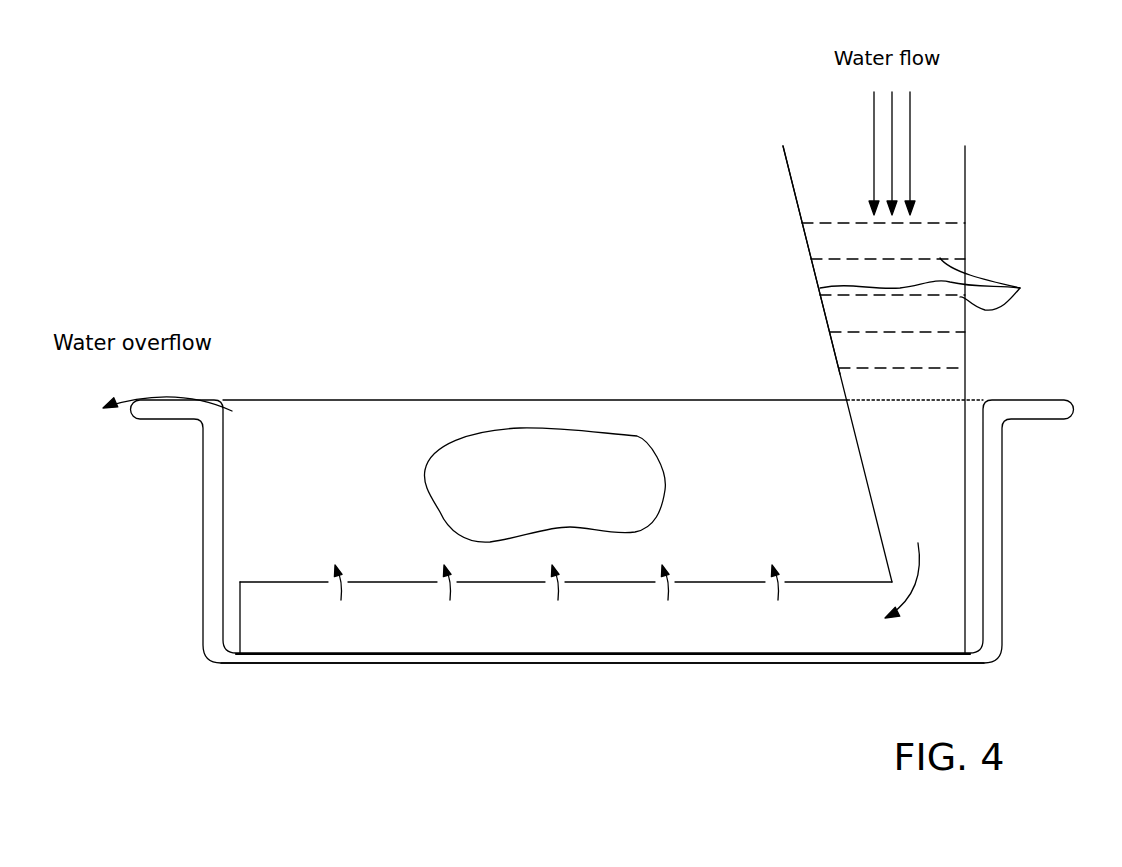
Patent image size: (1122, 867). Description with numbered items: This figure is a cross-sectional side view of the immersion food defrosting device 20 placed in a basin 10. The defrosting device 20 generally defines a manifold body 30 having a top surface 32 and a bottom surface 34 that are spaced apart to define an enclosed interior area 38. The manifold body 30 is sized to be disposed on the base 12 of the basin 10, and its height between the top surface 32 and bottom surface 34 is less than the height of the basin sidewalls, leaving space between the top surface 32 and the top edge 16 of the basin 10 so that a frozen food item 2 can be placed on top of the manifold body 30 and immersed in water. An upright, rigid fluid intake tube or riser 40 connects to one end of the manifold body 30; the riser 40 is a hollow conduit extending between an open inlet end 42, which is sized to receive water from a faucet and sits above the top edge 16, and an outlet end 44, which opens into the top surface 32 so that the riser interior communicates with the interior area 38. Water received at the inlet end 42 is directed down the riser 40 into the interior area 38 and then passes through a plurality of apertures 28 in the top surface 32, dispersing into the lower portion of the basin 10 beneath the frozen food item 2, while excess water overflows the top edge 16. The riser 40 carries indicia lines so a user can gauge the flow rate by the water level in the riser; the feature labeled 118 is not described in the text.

The frozen food item 2 is at (537, 501).
The basin 10 is at (200, 533).
The base 12 is at (215, 658).
The top edge 16 is at (432, 400).
The defrosting device 20 is at (818, 358).
The apertures 28 is at (348, 582).
The manifold body 30 is at (705, 620).
The top surface 32 is at (385, 582).
The bottom surface 34 is at (448, 650).
The enclosed interior area 38 is at (581, 629).
The riser 40 is at (790, 208).
The inlet end 42 is at (942, 148).
The outlet end 44 is at (935, 584).
The water surface 118 is at (934, 284).